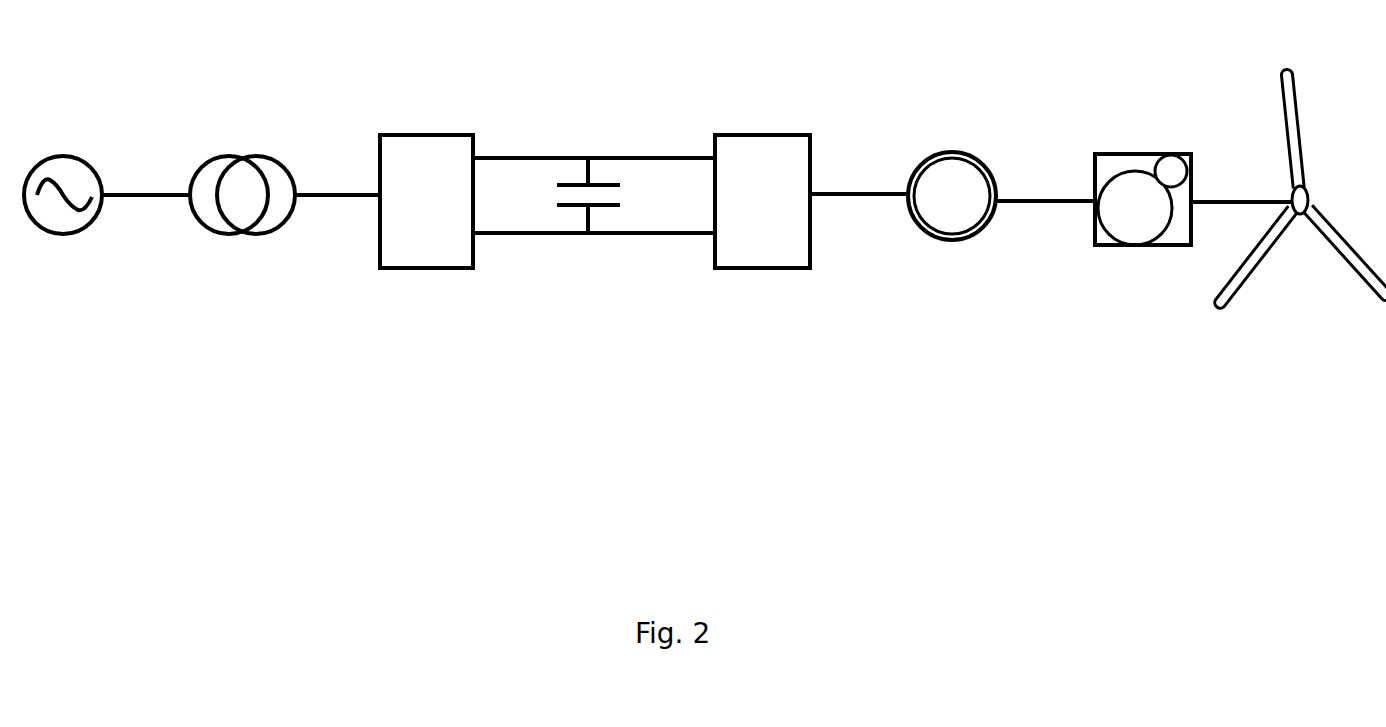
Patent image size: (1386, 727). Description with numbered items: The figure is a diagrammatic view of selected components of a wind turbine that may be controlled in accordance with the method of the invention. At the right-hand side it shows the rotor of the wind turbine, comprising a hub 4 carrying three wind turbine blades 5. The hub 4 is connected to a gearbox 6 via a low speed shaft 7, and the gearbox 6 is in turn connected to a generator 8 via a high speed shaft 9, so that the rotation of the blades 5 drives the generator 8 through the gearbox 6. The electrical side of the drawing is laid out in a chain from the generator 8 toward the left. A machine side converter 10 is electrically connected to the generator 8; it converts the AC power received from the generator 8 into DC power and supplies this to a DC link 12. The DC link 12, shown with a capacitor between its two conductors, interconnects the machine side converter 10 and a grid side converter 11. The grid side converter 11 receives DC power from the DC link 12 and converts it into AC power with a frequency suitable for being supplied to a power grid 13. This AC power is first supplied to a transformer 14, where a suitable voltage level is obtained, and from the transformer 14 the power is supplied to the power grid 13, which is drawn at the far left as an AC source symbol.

The hub 4 is at (1306, 196).
The wind turbine blades 5 is at (1295, 112).
The gearbox 6 is at (1138, 158).
The low speed shaft 7 is at (1250, 197).
The generator 8 is at (935, 155).
The high speed shaft 9 is at (1037, 205).
The machine side converter 10 is at (758, 153).
The grid side converter 11 is at (422, 153).
The DC link 12 is at (600, 237).
The power grid 13 is at (67, 168).
The transformer 14 is at (240, 217).